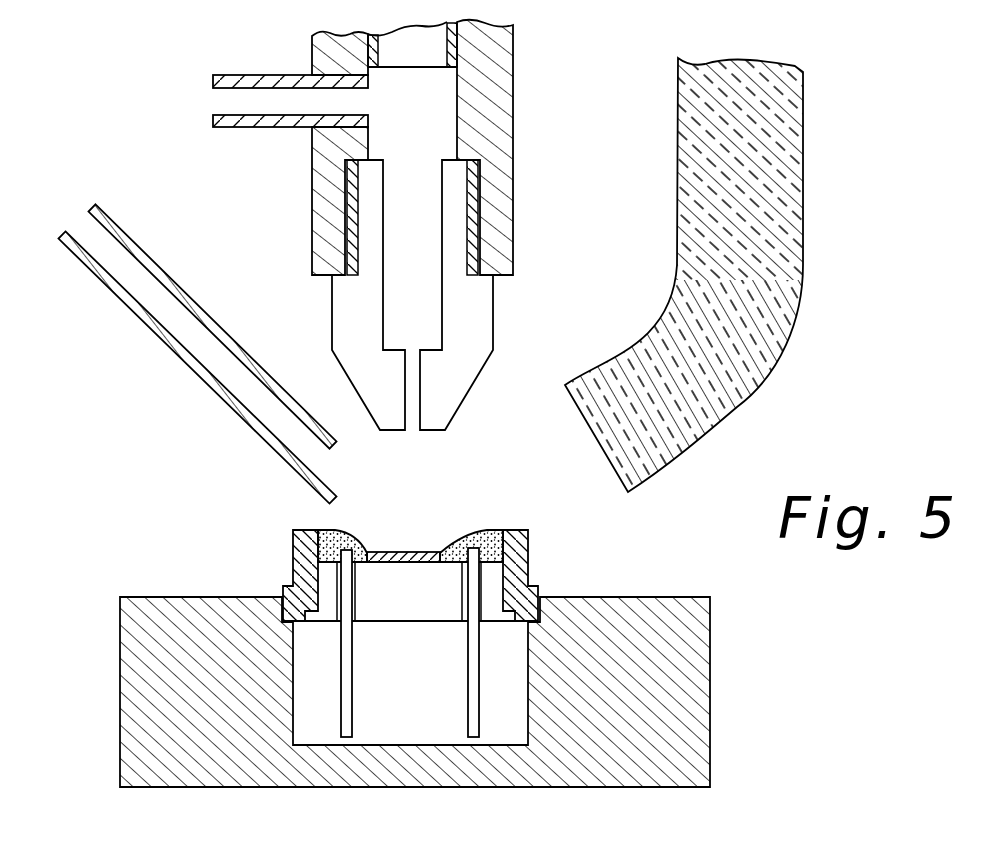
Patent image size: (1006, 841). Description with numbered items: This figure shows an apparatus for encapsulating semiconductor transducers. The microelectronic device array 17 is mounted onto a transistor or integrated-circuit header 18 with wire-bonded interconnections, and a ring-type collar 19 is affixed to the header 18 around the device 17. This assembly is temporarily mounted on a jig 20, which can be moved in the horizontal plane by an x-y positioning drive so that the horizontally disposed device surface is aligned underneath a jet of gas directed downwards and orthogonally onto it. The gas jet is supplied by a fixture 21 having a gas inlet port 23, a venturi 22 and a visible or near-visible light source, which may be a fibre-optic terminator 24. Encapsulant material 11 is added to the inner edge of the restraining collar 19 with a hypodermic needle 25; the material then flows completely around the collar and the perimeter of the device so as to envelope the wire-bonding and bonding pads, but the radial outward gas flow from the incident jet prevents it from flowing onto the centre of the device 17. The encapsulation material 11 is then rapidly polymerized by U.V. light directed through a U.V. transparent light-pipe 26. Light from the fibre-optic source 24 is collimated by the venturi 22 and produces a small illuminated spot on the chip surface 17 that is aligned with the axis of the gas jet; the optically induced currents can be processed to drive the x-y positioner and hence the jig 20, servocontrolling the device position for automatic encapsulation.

The encapsulant material 11 is at (492, 530).
The microelectronic device array 17 is at (397, 552).
The header 18 is at (413, 601).
The ring-type collar 19 is at (293, 552).
The jig 20 is at (158, 607).
The fixture 21 is at (497, 128).
The venturi 22 is at (477, 315).
The gas inlet port 23 is at (249, 75).
The fibre-optic terminator 24 is at (408, 50).
The hypodermic needle 25 is at (178, 360).
The U.V. transparent light-pipe 26 is at (760, 360).